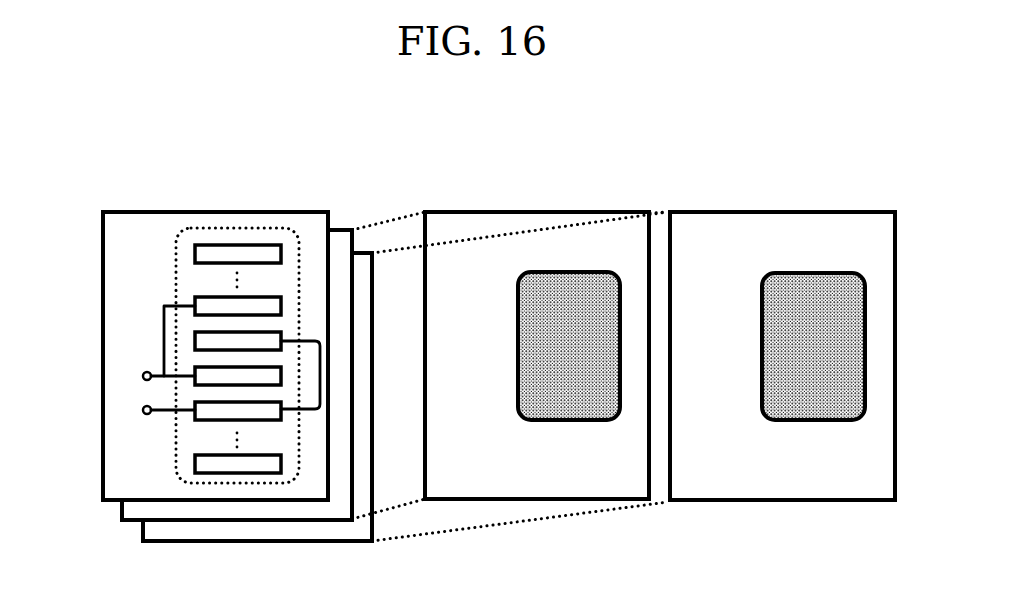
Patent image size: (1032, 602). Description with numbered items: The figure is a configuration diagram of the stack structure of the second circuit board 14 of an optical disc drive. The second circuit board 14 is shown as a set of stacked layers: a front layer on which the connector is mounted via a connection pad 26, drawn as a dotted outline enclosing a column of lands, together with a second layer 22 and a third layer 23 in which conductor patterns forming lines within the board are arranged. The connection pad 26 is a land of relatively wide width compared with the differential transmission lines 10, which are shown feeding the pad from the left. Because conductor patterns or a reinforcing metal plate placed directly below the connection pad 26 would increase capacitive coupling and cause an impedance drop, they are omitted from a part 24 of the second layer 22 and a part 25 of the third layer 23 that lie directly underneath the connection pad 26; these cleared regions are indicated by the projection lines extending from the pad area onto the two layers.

The differential transmission lines 10 is at (144, 407).
The second circuit board 14 is at (130, 212).
The second layer 22 is at (527, 212).
The third layer 23 is at (753, 212).
The part of the second layer directly underneath the connection pad 24 is at (558, 283).
The part of the third layer directly underneath the connection pad 25 is at (797, 283).
The connection pad 26 is at (252, 228).